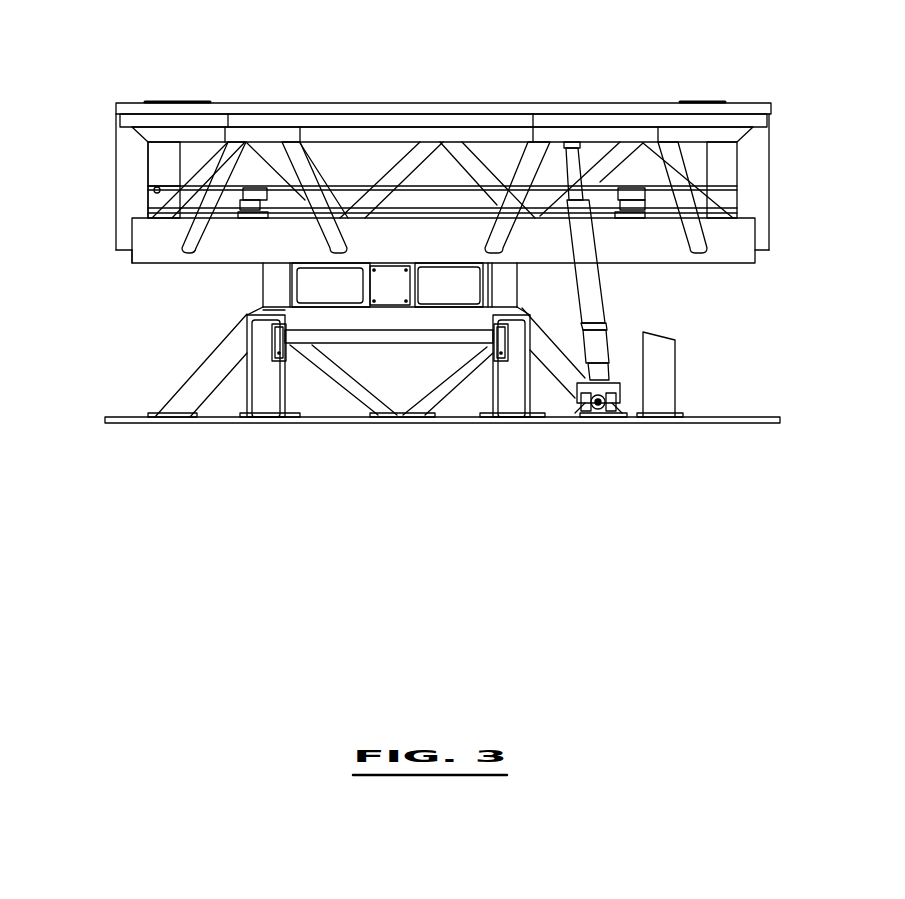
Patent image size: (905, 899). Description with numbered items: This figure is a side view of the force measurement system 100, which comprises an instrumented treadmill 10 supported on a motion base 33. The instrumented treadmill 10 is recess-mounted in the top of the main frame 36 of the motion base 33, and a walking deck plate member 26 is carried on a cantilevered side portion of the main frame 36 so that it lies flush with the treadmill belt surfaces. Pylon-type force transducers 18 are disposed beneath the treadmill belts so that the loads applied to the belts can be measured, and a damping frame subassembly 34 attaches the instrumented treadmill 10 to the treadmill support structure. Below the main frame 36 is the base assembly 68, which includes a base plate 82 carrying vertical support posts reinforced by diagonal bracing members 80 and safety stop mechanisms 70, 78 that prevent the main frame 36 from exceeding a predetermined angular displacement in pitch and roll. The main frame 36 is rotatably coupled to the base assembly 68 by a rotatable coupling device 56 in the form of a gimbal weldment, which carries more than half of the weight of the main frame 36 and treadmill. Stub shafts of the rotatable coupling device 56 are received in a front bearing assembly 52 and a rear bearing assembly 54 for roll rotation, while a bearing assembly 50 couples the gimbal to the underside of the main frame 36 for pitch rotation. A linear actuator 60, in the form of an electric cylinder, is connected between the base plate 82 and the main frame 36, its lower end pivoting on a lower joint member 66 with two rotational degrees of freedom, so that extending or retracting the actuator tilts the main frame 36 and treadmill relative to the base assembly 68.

The instrumented treadmill 10 is at (348, 167).
The pylon-type force transducers 18 is at (235, 198).
The walking deck plate member 26 is at (550, 112).
The motion base 33 is at (114, 286).
The damping frame subassembly 34 is at (437, 202).
The main frame 36 is at (727, 243).
The bearing assembly 50 is at (390, 302).
The front bearing assembly 52 is at (507, 282).
The rear bearing assembly 54 is at (272, 285).
The rotatable coupling device 56 is at (320, 285).
The linear actuator 60 is at (590, 300).
The lower joint member 66 is at (598, 408).
The base assembly 68 is at (724, 438).
The safety stop mechanism 70 is at (663, 372).
The safety stop mechanism 78 is at (407, 337).
The diagonal bracing member 80 is at (213, 368).
The base plate 82 is at (750, 417).
The force measurement system 100 is at (152, 451).